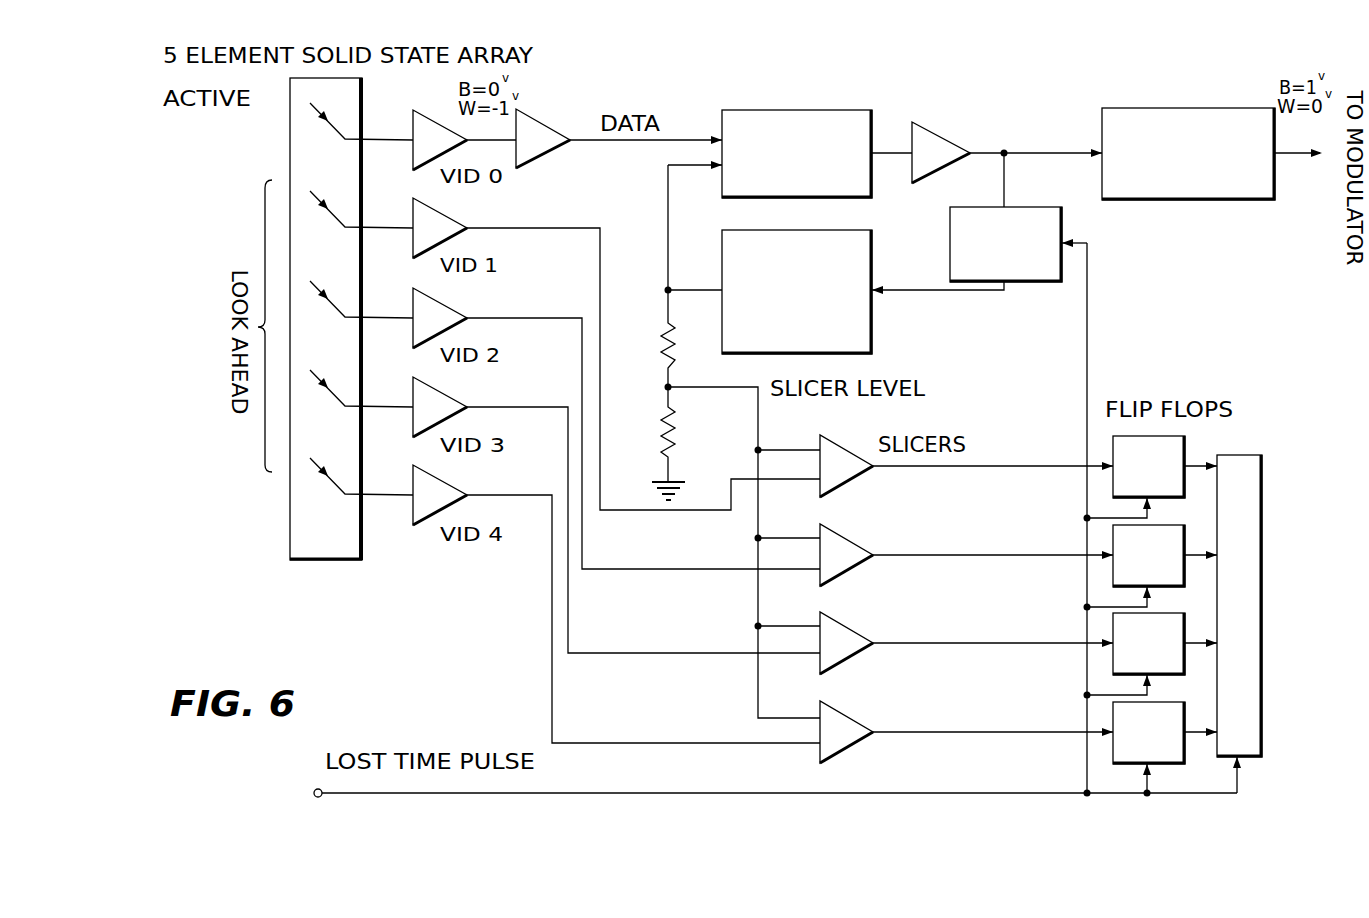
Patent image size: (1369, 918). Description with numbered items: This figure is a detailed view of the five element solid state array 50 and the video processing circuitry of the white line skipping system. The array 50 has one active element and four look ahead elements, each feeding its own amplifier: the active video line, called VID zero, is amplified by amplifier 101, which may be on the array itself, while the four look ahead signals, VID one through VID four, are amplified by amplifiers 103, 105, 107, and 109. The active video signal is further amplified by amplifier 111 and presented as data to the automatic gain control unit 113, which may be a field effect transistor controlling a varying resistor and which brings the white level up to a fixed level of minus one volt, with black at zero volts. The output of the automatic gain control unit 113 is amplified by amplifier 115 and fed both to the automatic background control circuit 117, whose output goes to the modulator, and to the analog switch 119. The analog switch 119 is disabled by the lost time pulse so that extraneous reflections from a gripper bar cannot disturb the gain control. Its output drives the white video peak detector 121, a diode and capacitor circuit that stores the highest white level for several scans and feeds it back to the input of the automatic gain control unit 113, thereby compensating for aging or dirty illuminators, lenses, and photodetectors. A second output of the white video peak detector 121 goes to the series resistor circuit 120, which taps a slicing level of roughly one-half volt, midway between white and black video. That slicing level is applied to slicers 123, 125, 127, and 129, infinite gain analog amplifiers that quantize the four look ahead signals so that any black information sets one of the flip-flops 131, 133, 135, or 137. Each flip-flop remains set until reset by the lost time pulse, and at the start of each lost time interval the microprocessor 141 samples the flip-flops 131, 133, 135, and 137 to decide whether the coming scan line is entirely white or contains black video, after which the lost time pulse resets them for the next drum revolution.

The five element solid state array 50 is at (365, 108).
The amplifier 101 is at (422, 152).
The amplifier 103 is at (422, 242).
The amplifier 105 is at (415, 330).
The amplifier 107 is at (422, 422).
The amplifier 109 is at (418, 512).
The amplifier 111 is at (550, 132).
The automatic gain control unit 113 is at (872, 112).
The amplifier 115 is at (940, 130).
The automatic background control circuit 117 is at (1207, 88).
The analog switch 119 is at (1065, 226).
The resistor circuit 120 is at (662, 334).
The white video peak detector 121 is at (880, 262).
The slicer 123 is at (863, 470).
The slicer 125 is at (865, 560).
The slicer 127 is at (860, 648).
The slicer 129 is at (857, 738).
The flip-flop 131 is at (1117, 486).
The flip-flop 133 is at (1117, 576).
The flip-flop 135 is at (1117, 658).
The flip-flop 137 is at (1117, 746).
The microprocessor 141 is at (1262, 458).